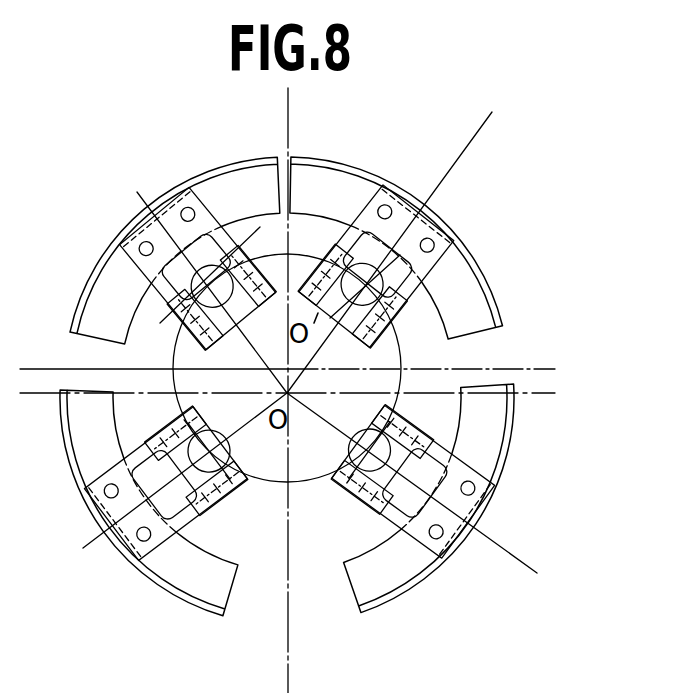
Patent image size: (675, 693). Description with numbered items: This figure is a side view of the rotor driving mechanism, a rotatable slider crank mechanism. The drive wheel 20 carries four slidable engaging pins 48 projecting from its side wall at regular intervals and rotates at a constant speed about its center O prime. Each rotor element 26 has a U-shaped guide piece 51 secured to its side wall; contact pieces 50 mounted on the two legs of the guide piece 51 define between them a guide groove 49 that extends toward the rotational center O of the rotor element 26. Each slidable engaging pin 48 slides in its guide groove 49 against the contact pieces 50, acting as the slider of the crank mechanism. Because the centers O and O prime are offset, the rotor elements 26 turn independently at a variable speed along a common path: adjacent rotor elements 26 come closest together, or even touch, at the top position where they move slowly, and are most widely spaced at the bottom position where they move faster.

The drive wheel 20 is at (460, 366).
The rotor element 26 is at (333, 195).
The slidable engaging pin 48 is at (190, 300).
The guide groove 49 is at (398, 198).
The contact piece 50 is at (265, 282).
The U-shaped guide piece 51 is at (162, 210).